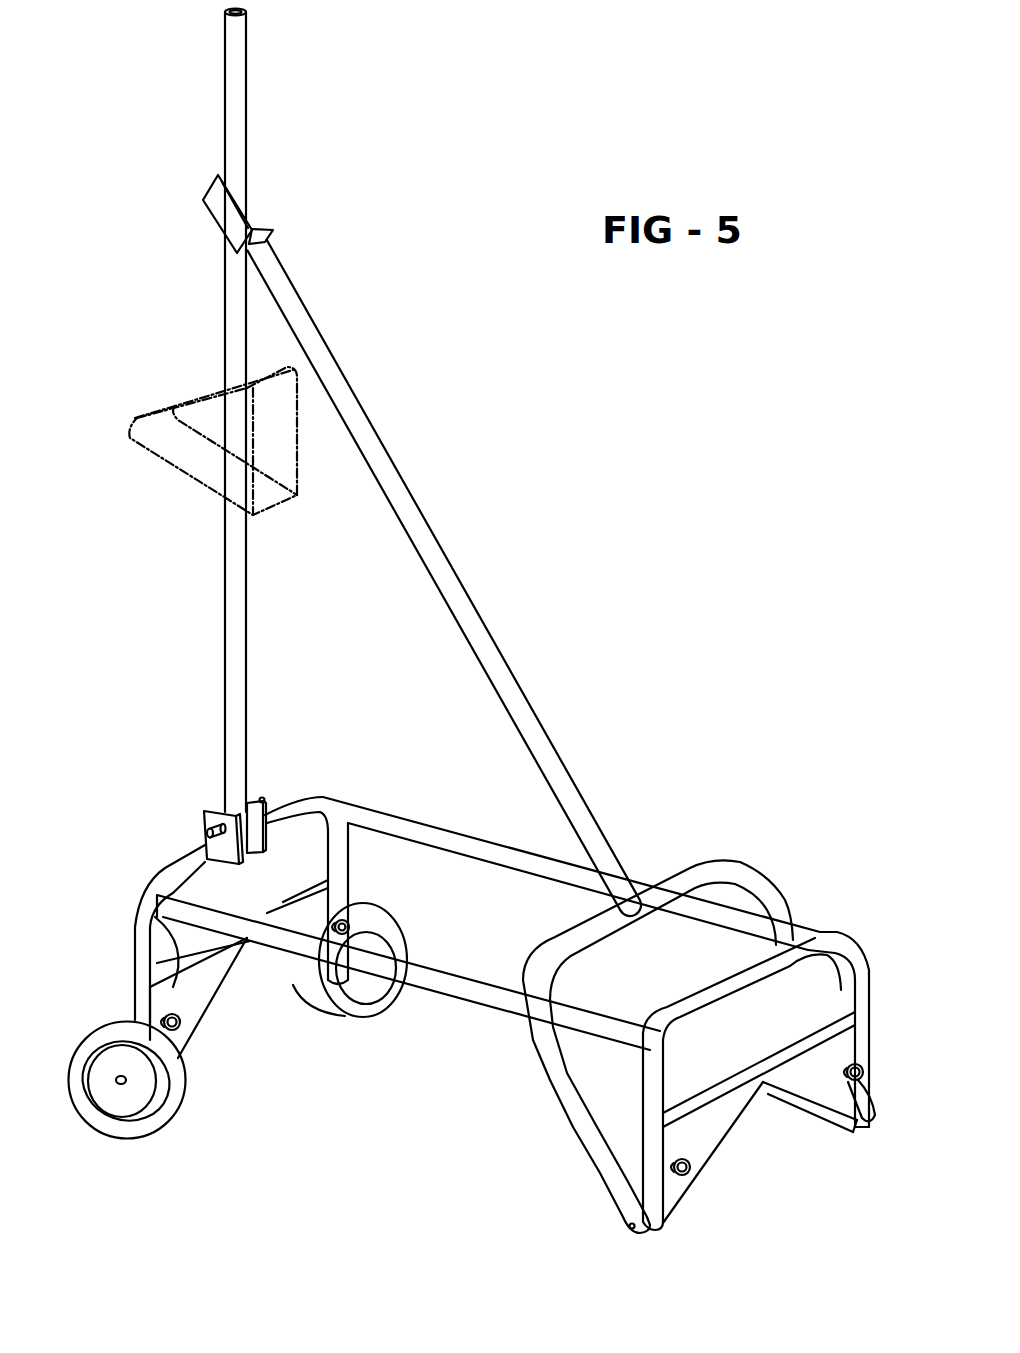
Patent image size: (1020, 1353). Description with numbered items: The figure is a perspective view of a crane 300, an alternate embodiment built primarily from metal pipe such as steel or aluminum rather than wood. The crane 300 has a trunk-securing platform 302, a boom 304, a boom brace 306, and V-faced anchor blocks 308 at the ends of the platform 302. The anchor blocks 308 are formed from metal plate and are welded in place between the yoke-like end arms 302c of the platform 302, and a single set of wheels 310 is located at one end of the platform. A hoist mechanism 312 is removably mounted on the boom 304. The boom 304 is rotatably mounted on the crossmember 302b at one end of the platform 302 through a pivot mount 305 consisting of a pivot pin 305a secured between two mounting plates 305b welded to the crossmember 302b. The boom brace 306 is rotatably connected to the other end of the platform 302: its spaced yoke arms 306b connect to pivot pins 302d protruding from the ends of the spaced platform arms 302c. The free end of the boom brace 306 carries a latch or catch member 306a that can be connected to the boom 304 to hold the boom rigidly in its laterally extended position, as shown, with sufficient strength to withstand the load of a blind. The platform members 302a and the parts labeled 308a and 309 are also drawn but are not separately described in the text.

The crane 300 is at (604, 641).
The trunk-securing platform 302 is at (424, 780).
The side rails 302a is at (490, 843).
The crossmember 302b is at (185, 863).
The yoke-like end arms 302c is at (871, 980).
The pivot pins 302d is at (628, 1226).
The boom 304 is at (247, 128).
The hinge 305 is at (262, 773).
The pivot pin 305a is at (203, 832).
The mounting plates 305b is at (247, 815).
The boom brace 306 is at (459, 640).
The latch or catch member 306a is at (217, 195).
The spaced yoke arms 306b is at (747, 878).
The V-faced anchor blocks 308 is at (170, 987).
The bolt 308a is at (185, 1027).
The brace 309 is at (225, 993).
The wheels 310 is at (122, 1107).
The hoist mechanism 312 is at (190, 381).